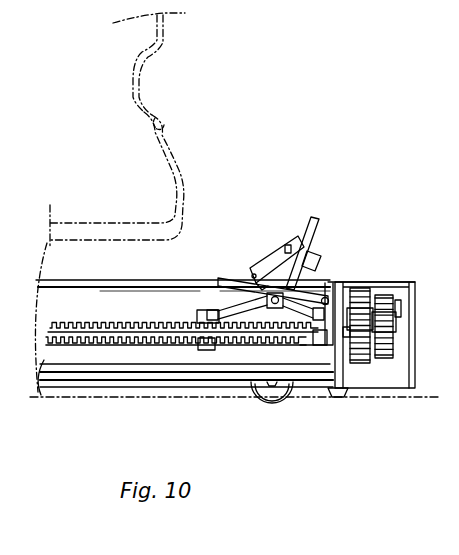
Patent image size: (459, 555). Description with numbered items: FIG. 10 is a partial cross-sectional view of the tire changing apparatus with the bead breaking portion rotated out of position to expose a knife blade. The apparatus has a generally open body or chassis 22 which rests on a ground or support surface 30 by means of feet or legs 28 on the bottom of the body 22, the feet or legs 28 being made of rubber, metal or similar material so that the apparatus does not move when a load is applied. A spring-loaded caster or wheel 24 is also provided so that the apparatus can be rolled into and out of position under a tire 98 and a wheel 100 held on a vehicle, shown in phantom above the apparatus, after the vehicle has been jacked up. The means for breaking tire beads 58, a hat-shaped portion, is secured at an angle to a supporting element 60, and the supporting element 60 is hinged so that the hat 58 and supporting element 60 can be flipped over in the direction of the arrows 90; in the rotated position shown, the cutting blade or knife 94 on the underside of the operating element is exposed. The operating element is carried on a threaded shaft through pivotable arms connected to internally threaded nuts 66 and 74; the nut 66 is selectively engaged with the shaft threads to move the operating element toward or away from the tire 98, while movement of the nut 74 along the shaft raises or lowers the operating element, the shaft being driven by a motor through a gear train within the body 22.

The body or chassis 22 is at (377, 304).
The caster or wheel 24 is at (285, 394).
The feet or legs 28 is at (338, 397).
The ground or support surface 30 is at (70, 396).
The means for breaking tire beads 58 is at (310, 237).
The supporting element 60 is at (266, 267).
The internally threaded nut 66 is at (333, 322).
The internally threaded nut 74 is at (205, 350).
The arrows 90 is at (297, 229).
The cutting blade or knife 94 is at (234, 283).
The tire 98 is at (177, 160).
The wheel 100 is at (157, 98).